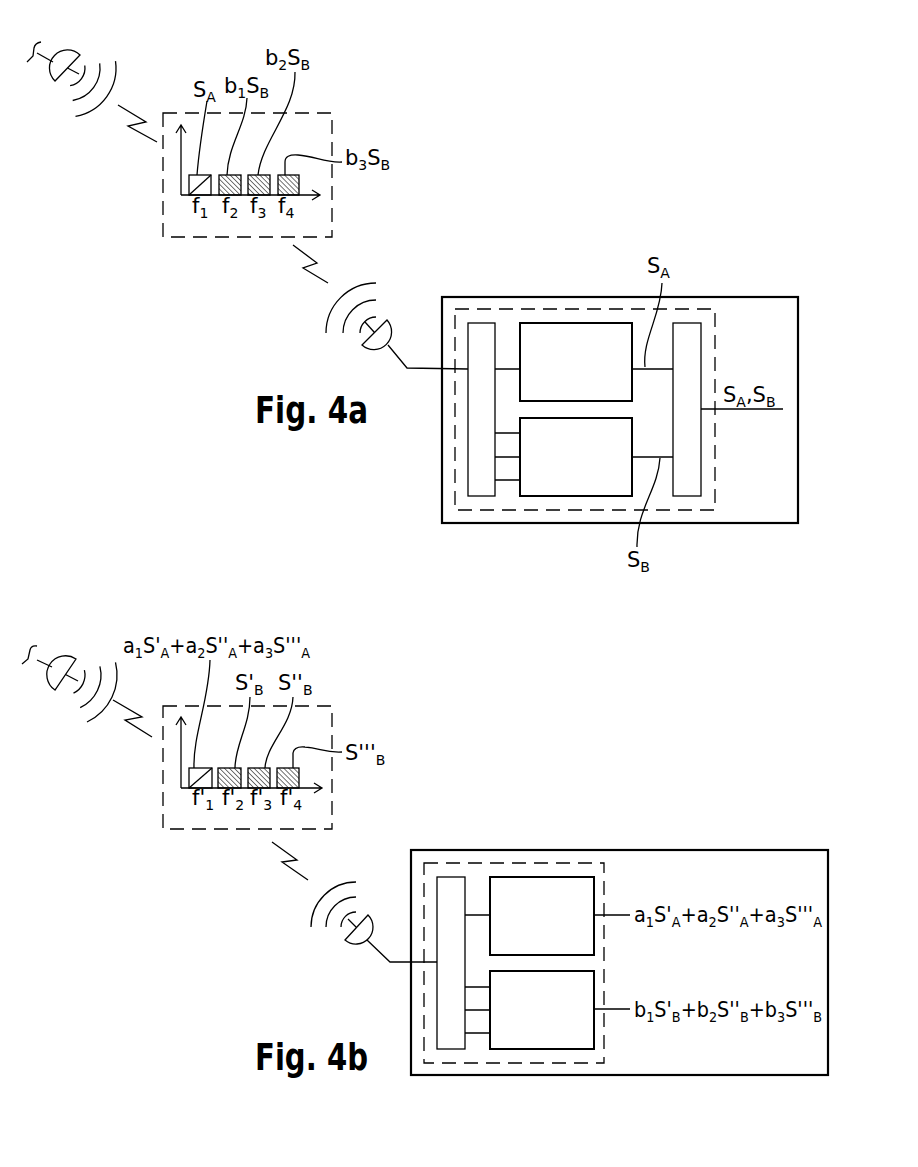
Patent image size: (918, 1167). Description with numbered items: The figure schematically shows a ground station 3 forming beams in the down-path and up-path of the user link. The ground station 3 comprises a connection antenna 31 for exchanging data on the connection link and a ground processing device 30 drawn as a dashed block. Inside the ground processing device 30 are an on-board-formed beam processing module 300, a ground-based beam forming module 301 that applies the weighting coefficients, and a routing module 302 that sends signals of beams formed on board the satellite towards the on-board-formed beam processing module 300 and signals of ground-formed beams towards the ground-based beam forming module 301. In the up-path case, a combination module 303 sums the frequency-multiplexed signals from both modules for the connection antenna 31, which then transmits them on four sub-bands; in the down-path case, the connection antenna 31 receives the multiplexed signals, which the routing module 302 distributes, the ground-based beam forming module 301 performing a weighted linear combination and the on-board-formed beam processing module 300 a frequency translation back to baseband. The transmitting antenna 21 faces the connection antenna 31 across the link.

In FIG. 4A, the transmitting antenna 21 is at (65, 50).
In FIG. 4B, the transmitting antenna 21 is at (58, 658).
In FIG. 4A, the connection antenna 31 is at (389, 331).
In FIG. 4B, the connection antenna 31 is at (355, 945).
In FIG. 4A, the ground station 3 is at (752, 297).
In FIG. 4B, the ground station 3 is at (722, 850).
In FIG. 4A, the ground processing device 30 is at (512, 309).
In FIG. 4B, the ground processing device 30 is at (482, 863).
In FIG. 4A, the on-board-formed beam processing module 300 is at (580, 337).
In FIG. 4B, the on-board-formed beam processing module 300 is at (543, 890).
In FIG. 4A, the ground-based beam forming module 301 is at (582, 480).
In FIG. 4B, the ground-based beam forming module 301 is at (550, 1030).
In FIG. 4A, the routing module 302 is at (687, 488).
In FIG. 4B, the routing module 302 is at (448, 877).
In FIG. 4A, the combination module 303 is at (479, 323).